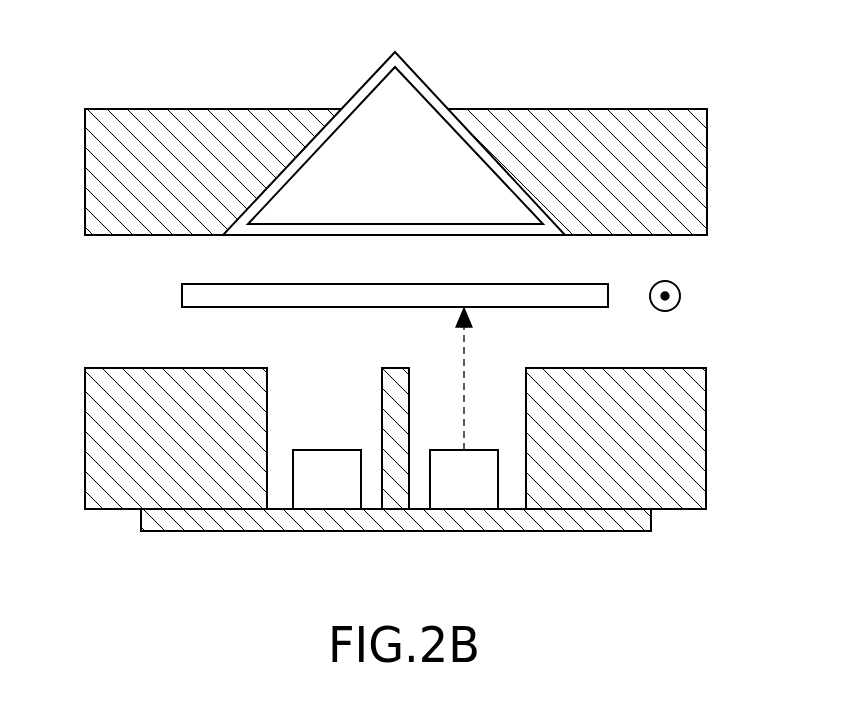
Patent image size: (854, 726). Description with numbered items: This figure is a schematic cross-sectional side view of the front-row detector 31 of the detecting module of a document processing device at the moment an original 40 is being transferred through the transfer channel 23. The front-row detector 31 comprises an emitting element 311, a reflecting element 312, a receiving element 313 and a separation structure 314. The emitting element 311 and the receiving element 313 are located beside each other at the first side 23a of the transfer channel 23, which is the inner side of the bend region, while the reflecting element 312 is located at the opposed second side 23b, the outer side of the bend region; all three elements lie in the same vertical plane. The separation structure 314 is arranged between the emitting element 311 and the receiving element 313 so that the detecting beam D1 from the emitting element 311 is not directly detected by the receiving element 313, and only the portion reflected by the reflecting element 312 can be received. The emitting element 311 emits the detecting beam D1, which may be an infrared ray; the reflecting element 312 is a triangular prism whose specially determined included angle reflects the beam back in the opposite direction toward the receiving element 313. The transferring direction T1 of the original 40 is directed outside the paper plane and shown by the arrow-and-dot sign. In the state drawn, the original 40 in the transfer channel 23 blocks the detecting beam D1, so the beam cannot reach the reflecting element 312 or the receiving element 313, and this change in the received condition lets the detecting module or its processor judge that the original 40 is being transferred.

The transfer channel 23 is at (396, 331).
The first side of the transfer channel 23a is at (583, 520).
The second side of the transfer channel 23b is at (203, 125).
The front-row detector 31 is at (453, 306).
The emitting element 311 is at (469, 487).
The reflecting element 312 is at (428, 92).
The receiving element 313 is at (325, 487).
The separation structure 314 is at (397, 376).
The original 40 is at (388, 296).
The detecting beam D1 is at (465, 368).
The transferring direction T1 is at (685, 296).